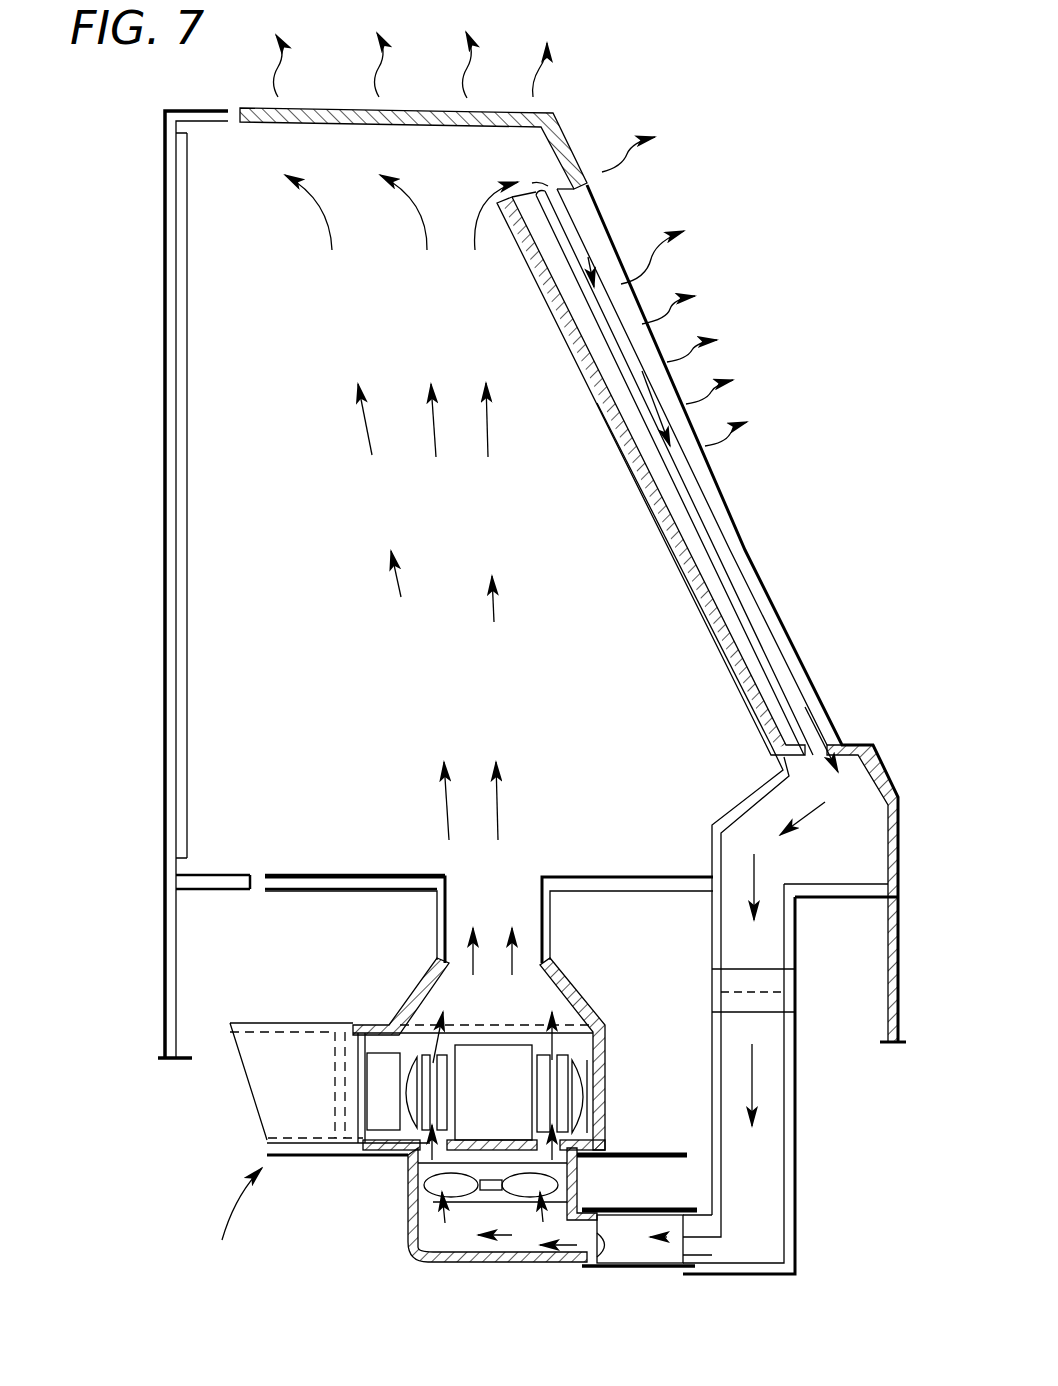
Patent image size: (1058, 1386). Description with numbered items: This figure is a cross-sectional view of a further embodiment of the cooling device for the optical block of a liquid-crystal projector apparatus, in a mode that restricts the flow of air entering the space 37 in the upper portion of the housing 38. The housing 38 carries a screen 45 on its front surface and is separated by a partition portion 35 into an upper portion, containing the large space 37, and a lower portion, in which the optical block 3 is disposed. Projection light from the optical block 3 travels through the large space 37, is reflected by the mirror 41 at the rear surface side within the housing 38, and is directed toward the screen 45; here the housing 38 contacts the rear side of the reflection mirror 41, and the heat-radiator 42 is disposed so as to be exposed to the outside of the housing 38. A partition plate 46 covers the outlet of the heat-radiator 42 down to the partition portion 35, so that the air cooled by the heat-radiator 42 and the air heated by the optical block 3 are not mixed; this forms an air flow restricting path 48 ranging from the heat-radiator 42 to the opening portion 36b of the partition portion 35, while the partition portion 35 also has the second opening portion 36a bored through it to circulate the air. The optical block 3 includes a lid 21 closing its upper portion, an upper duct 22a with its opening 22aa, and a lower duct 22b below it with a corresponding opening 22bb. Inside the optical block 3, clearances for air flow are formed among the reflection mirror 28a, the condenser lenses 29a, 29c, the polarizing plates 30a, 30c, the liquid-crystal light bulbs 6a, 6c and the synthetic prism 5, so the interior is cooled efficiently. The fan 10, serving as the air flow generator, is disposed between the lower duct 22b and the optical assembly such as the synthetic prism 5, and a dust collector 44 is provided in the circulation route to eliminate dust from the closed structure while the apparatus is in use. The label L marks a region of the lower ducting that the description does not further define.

The optical block 3 is at (236, 1211).
The synthetic prism 5 is at (478, 1060).
The liquid-crystal light bulb 6a is at (440, 1058).
The liquid-crystal light bulb 6c is at (545, 1055).
The fan 10 is at (440, 1180).
The lid 21 is at (260, 1023).
The upper duct 22a is at (570, 982).
The opening 22aa is at (527, 957).
The lower duct 22b is at (482, 1262).
The opening 22bb is at (602, 1262).
The reflection mirror 28a is at (363, 1063).
The condenser lens 29a is at (405, 1062).
The condenser lens 29c is at (572, 1063).
The polarizing plate 30a is at (425, 1058).
The polarizing plate 30c is at (560, 1057).
The partition portion 35 is at (815, 890).
The opening portion 36a is at (515, 892).
The opening portion 36b is at (739, 896).
The large space 37 is at (525, 160).
The housing 38 is at (540, 253).
The mirror 41 is at (692, 616).
The heat-radiator 42 is at (805, 680).
The dust collector 44 is at (770, 982).
The screen 45 is at (188, 452).
The partition plate 46 is at (740, 803).
The air flow restricting path 48 is at (706, 520).
The lamp L is at (640, 1158).